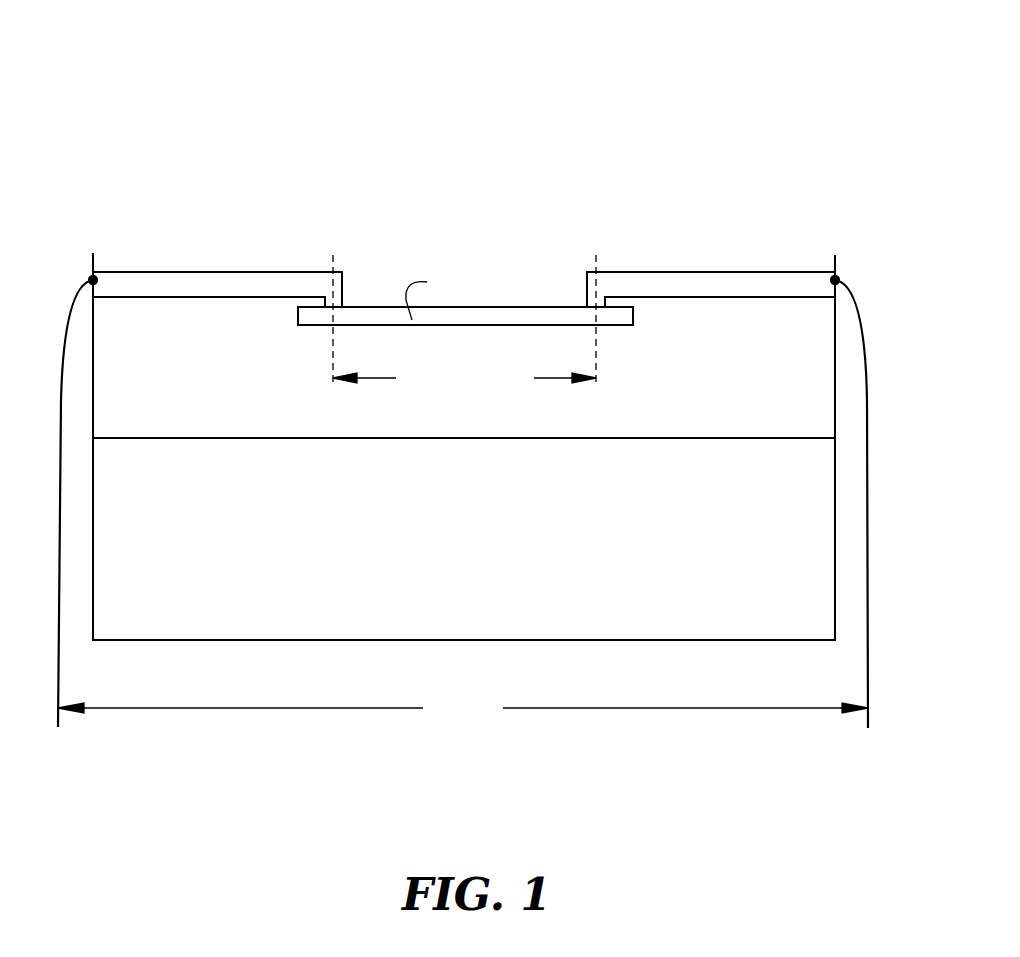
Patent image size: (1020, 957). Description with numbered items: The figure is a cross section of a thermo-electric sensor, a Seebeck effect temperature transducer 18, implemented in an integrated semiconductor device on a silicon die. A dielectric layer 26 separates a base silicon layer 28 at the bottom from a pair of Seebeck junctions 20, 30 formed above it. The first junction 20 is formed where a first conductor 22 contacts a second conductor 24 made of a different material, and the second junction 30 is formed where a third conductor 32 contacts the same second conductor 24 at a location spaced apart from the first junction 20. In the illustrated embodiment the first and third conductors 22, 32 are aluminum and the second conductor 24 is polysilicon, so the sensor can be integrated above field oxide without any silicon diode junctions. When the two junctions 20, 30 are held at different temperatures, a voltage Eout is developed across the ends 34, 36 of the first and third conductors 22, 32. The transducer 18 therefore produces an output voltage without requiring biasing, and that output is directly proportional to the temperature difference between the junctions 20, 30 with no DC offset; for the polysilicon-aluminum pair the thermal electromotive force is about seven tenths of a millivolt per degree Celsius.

The temperature transducer 18 is at (744, 100).
The first junction 20 is at (331, 257).
The first conductor 22 is at (139, 272).
The second conductor 24 is at (368, 307).
The dielectric layer 26 is at (562, 352).
The base silicon layer 28 is at (745, 622).
The second junction 30 is at (602, 258).
The third conductor 32 is at (790, 272).
The end of first conductor 34 is at (58, 715).
The end of third conductor 36 is at (866, 718).